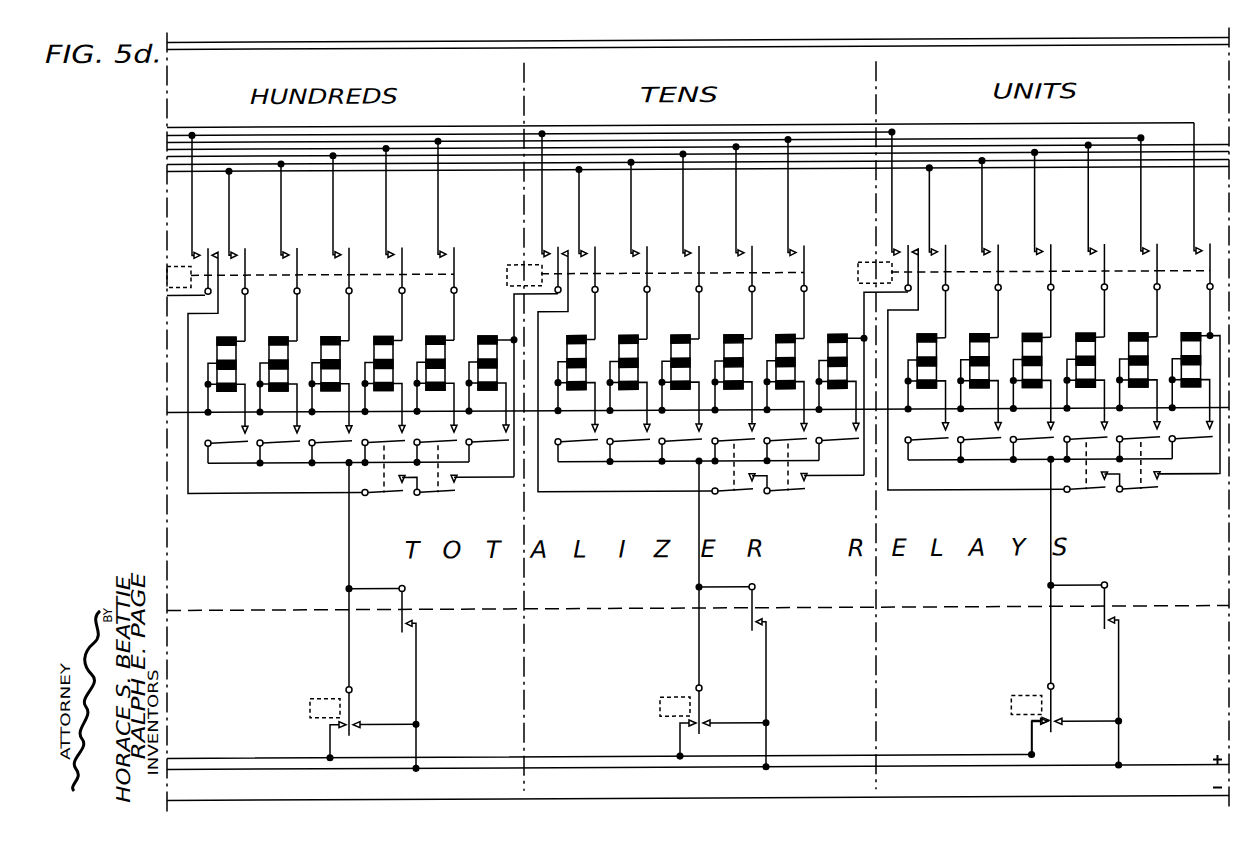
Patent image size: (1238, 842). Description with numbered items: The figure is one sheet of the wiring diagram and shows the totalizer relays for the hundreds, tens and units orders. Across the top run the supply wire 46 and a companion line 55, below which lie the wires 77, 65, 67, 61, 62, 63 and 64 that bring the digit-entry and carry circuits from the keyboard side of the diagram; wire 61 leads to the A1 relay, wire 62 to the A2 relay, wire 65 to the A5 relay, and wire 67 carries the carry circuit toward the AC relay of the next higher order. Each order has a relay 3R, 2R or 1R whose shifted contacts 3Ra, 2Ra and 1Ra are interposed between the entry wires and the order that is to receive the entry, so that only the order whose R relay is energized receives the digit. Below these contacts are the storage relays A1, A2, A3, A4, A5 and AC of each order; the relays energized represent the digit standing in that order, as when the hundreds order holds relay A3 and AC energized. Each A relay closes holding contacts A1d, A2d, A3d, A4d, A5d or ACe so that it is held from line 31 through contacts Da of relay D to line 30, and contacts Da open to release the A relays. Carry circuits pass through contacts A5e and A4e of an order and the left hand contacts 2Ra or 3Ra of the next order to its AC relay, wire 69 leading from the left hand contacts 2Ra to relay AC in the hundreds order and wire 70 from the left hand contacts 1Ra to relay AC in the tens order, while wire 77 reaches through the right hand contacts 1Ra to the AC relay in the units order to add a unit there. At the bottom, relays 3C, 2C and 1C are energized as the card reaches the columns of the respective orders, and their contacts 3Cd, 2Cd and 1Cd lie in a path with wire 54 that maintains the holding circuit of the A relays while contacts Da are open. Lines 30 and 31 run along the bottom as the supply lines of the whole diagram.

The wire 46 is at (625, 40).
The supply line 55 is at (792, 47).
The wire 77 is at (503, 125).
The wire 65 is at (590, 140).
The wire 67 is at (770, 133).
The wire 61 is at (908, 169).
The wire 62 is at (957, 162).
The bus conductor 63 is at (1007, 154).
The bus conductor 64 is at (1060, 147).
The wire 69 is at (514, 296).
The wire 70 is at (864, 296).
The wire 54 is at (592, 755).
The line 30 is at (920, 768).
The line 31 is at (672, 798).
The hundreds relay 3R is at (177, 257).
The contacts 3Ra is at (443, 249).
The tens relay 2R is at (513, 264).
The contacts 2Ra is at (672, 311).
The relay 1R is at (865, 263).
The contacts 1Ra is at (1024, 310).
The relay A1 is at (217, 347).
The relay A2 is at (269, 347).
The relay A3 is at (321, 347).
The relay A4 is at (374, 347).
The relay A5 is at (426, 347).
The relay AC is at (478, 347).
The contacts A1d is at (237, 436).
The contacts A2d is at (289, 436).
The relay contact A3d is at (341, 436).
The relay contact A4d is at (394, 436).
The relay contact A5d is at (446, 436).
The relay contact ACe is at (498, 436).
The contacts A4e is at (407, 490).
The contacts A5e is at (464, 490).
The contacts Da is at (408, 622).
The relay 3C is at (320, 697).
The clear relay contact 3Cd is at (353, 717).
The relay 2C is at (663, 693).
The clear relay contact 2Cd is at (723, 721).
The relay 1C is at (1015, 691).
The clear relay contact 1Cd is at (1075, 719).